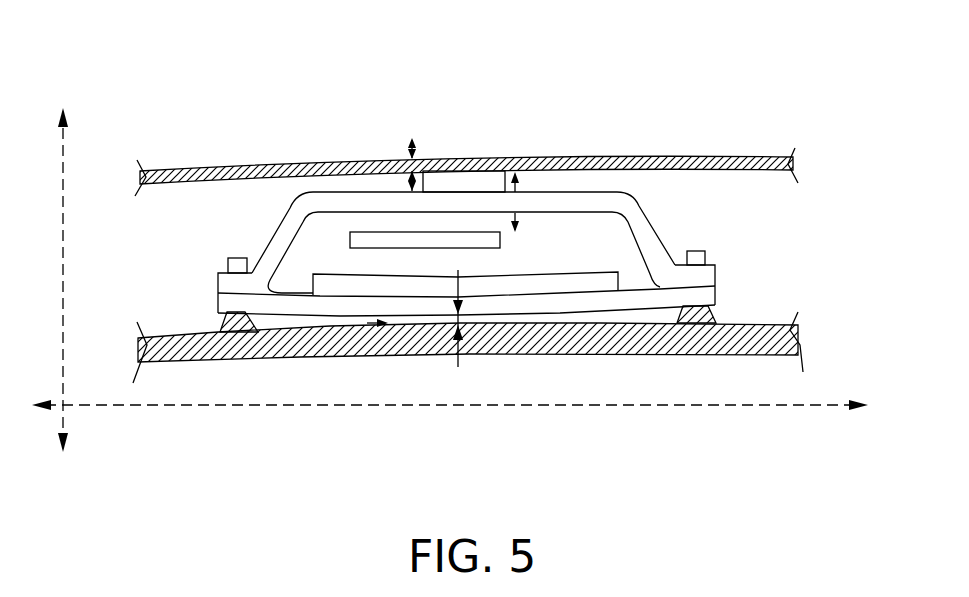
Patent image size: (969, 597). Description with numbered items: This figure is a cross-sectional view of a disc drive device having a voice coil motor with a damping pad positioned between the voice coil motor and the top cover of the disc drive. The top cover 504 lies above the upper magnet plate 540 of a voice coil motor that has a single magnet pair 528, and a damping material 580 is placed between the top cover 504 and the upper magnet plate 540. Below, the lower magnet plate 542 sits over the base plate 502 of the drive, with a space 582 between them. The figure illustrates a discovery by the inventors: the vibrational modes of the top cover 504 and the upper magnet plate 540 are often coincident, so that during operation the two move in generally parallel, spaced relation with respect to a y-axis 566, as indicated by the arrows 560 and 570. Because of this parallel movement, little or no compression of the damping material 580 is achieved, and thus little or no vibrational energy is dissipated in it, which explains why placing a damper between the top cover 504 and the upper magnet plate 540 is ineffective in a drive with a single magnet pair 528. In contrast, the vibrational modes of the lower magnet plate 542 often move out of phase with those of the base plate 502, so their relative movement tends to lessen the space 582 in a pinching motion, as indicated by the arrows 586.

The base plate 502 is at (797, 320).
The top cover 504 is at (222, 170).
The single magnet pair 528 is at (580, 285).
The upper magnet plate 540 is at (655, 235).
The lower magnet plate 542 is at (700, 293).
The arrows 560 is at (518, 214).
The y-axis 566 is at (63, 147).
The arrows 570 is at (408, 160).
The damping material 580 is at (463, 180).
The space 582 is at (337, 355).
The arrows 586 is at (462, 358).